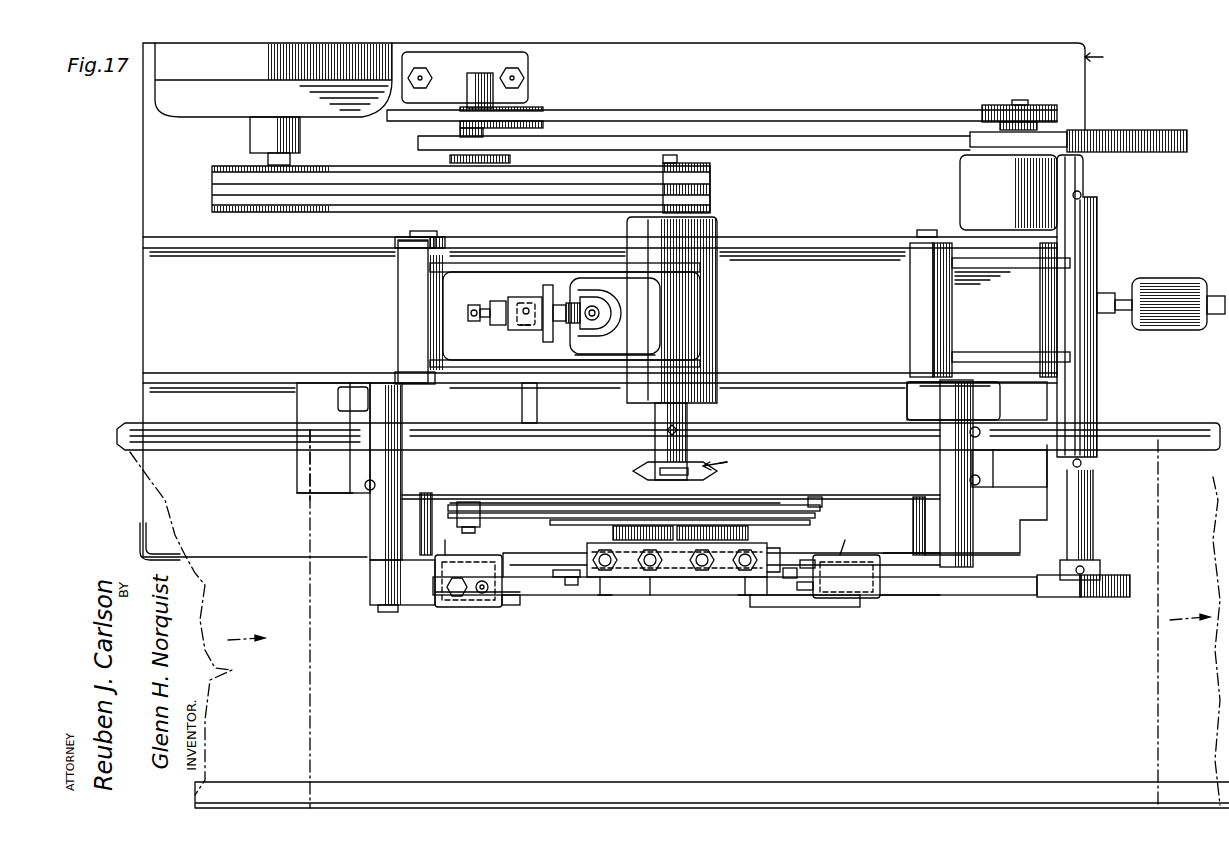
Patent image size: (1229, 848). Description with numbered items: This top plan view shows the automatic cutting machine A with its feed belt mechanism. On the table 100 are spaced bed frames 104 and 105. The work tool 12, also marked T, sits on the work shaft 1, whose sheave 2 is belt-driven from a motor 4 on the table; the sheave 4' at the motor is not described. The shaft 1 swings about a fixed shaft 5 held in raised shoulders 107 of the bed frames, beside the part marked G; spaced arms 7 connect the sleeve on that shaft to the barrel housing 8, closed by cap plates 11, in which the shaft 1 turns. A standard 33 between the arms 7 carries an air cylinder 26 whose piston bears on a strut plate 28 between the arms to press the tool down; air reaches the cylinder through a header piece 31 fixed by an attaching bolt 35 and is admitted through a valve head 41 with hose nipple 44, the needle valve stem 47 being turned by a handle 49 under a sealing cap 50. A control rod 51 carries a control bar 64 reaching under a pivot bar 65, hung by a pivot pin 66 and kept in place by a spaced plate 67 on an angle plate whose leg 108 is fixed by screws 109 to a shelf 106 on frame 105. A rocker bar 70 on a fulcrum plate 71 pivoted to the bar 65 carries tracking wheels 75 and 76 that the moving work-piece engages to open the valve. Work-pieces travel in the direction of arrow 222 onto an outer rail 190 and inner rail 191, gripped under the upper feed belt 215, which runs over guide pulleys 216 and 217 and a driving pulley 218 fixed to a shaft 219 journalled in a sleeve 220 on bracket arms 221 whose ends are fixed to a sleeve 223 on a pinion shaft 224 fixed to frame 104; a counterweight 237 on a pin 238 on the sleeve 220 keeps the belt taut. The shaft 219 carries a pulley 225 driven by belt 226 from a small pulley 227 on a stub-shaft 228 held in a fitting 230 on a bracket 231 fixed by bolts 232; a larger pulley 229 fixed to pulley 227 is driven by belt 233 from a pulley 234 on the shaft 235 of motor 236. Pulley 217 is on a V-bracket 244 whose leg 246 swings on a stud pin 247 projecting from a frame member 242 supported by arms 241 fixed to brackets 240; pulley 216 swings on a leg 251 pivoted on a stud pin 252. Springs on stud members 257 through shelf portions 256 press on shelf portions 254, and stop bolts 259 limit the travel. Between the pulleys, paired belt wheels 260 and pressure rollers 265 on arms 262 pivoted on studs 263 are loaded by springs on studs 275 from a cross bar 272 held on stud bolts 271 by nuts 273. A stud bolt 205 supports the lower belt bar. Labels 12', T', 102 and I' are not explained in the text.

The base plate or table 100 is at (614, 300).
The automatic cutting machine A is at (1101, 58).
The motor 4 is at (273, 104).
The gear stack / pulleys 4' is at (461, 201).
The drive pulley or sheave 2 is at (710, 170).
The work shaft 1 is at (687, 140).
The bracket 231 is at (528, 63).
The bolts 232 is at (524, 80).
The fitting 230 is at (462, 80).
The larger pulley wheel 229 is at (540, 110).
The drive belt 233 is at (700, 111).
The small diameter pulley 227 is at (420, 143).
The drive belt 226 is at (880, 150).
The stub-shaft 228 is at (510, 159).
The smaller pulley wheel 234 is at (1060, 108).
The motor shaft 235 is at (1020, 100).
The pulley wheel 225 is at (1172, 130).
The driving motor 236 is at (1008, 192).
The driven shaft 219 is at (1098, 185).
The sleeve 220 is at (1090, 378).
The pinion shaft 224 is at (925, 230).
The counterweight 237 is at (1170, 282).
The supporting pin 238 is at (1112, 298).
The bed frame 104 is at (838, 243).
The bed frame 105 is at (840, 373).
The fixed shaft 5 is at (425, 234).
The guide post G is at (398, 318).
The raised shoulders 107 is at (395, 245).
The spaced arms 7 is at (480, 260).
The barrel housing 8 is at (615, 343).
The handle 49 is at (468, 313).
The valve stem 47 is at (484, 308).
The sealing cap 50 is at (496, 325).
The valve head 41 is at (512, 298).
The control rod 51 is at (522, 331).
The supporting standard 33 is at (547, 285).
The air hose attaching nipple 44 is at (564, 305).
The strut plate 28 is at (578, 303).
The attaching bolt 35 is at (603, 300).
The air cylinder 26 is at (615, 305).
The header piece 31 is at (600, 320).
The cap plate 11 is at (712, 217).
The work tool 12 is at (697, 446).
The spindle cross piece 12' is at (651, 470).
The direction indicator T' is at (724, 459).
The work tool T is at (723, 462).
The horizontal control bar 64 is at (538, 405).
The sleeve 223 is at (910, 305).
The bracket arms 221 is at (1003, 264).
The bracket 240 is at (340, 402).
The laterally extending arm 241 is at (370, 530).
The inner rail 191 is at (165, 450).
The bolts or screws 109 is at (362, 458).
The shelf 106 is at (325, 493).
The leg of angle plate 108 is at (671, 480).
The pivot bar 65 is at (777, 505).
The fulcrum plate 71 is at (672, 513).
The pivot pin 66 is at (824, 504).
The rocker bar 70 is at (812, 523).
The spaced plate 67 is at (480, 516).
The pressure roller 265 is at (613, 531).
The tracking wheel 76 is at (587, 548).
The paired belt wheels 260 is at (630, 578).
The tracking wheel 75 is at (775, 546).
The upper feed belt 215 is at (1000, 596).
The horizontal supporting bar 242 is at (538, 596).
The overhanging shelf portion 256 is at (470, 557).
The laterally projecting shelf portion 254 is at (452, 546).
The laterally projecting leg 251 is at (410, 605).
The stud pin 252 is at (383, 612).
The threaded stop bolt 259 is at (450, 598).
The stud member 257 is at (480, 594).
The guide pulley 216 is at (508, 598).
The supporting arm 262 is at (565, 580).
The stud 263 is at (572, 586).
The stud bolts 271 is at (612, 572).
The cross bar 272 is at (602, 580).
The fixed studs 275 is at (655, 574).
The nut 273 is at (752, 574).
The stud pin 247 is at (770, 597).
The laterally extending leg 246 is at (803, 592).
The V-shaped bracket 244 is at (840, 608).
The guide pulley 217 is at (918, 598).
The stud bolt 205 is at (432, 520).
The driving pulley 218 is at (1110, 598).
The bracket 102 is at (146, 528).
The section line I' is at (734, 619).
The arrow 222 is at (235, 632).
The outer rail 190 is at (345, 782).